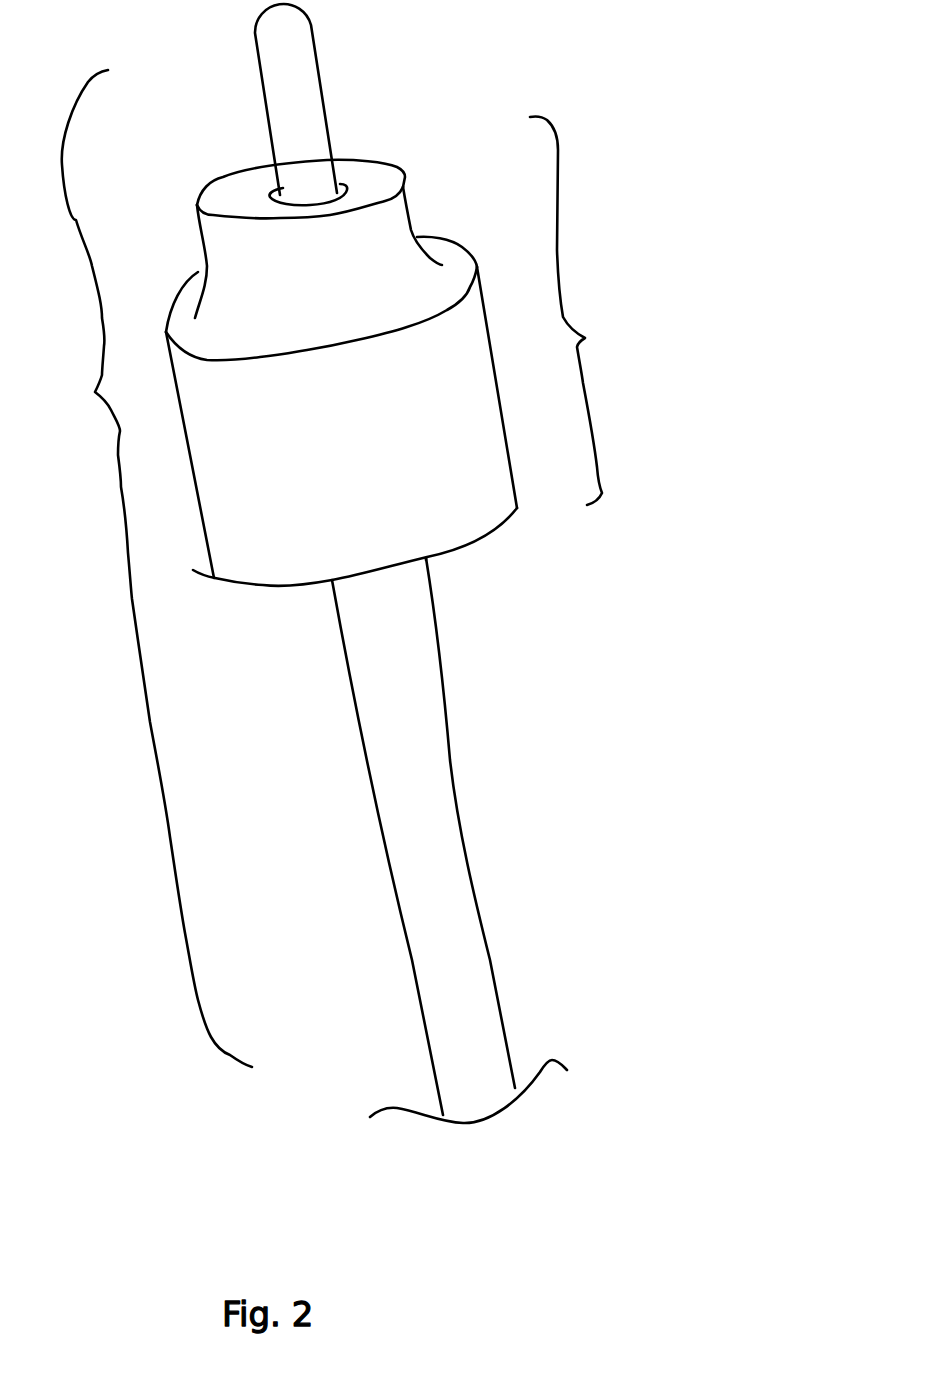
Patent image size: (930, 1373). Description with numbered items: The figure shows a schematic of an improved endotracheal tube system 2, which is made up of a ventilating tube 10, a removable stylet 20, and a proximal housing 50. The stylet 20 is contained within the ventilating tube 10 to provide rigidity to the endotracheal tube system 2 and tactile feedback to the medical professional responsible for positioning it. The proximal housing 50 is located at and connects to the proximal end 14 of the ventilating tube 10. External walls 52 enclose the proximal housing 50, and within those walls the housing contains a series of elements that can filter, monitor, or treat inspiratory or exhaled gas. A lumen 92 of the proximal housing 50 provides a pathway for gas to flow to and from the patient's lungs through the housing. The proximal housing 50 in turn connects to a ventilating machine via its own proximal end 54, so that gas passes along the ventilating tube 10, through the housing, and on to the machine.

The endotracheal tube system 2 is at (144, 568).
The ventilating endotracheal tube 10 is at (452, 698).
The proximal end 14 is at (429, 558).
The stylet 20 is at (318, 62).
The proximal housing 50 is at (596, 310).
The external walls 52 is at (503, 400).
The proximal end of proximal housing 54 is at (407, 182).
The lumen 92 is at (345, 187).